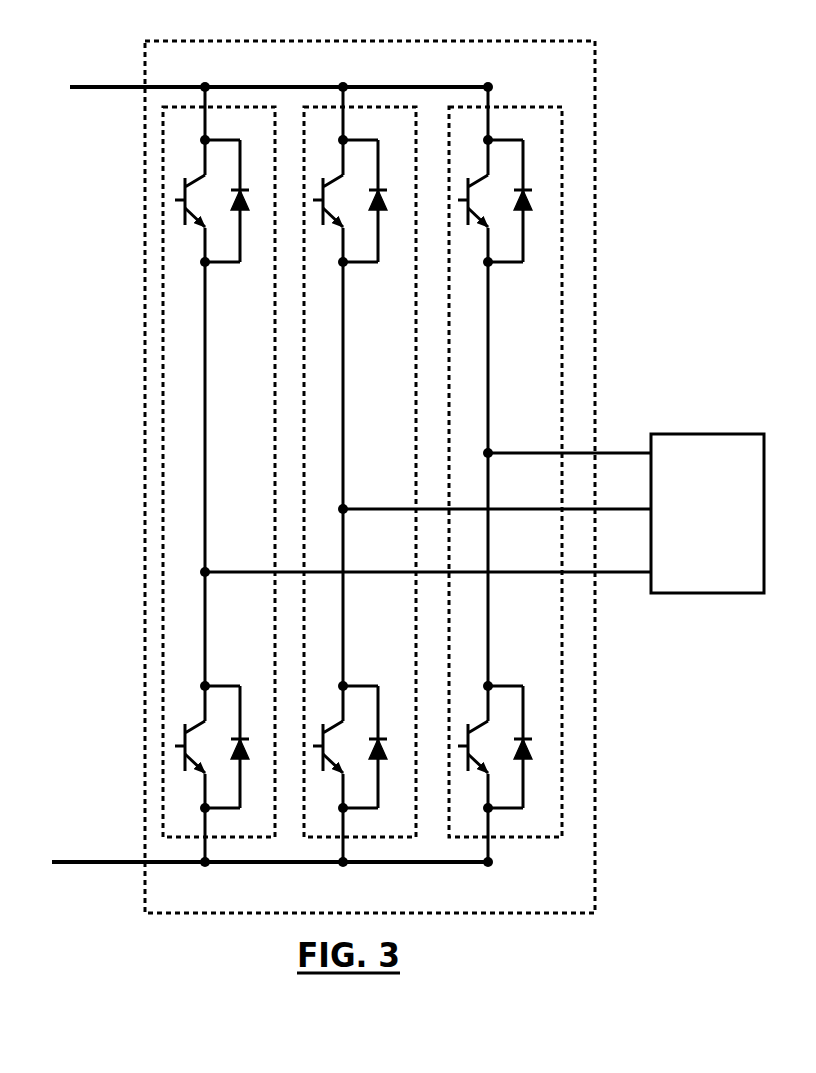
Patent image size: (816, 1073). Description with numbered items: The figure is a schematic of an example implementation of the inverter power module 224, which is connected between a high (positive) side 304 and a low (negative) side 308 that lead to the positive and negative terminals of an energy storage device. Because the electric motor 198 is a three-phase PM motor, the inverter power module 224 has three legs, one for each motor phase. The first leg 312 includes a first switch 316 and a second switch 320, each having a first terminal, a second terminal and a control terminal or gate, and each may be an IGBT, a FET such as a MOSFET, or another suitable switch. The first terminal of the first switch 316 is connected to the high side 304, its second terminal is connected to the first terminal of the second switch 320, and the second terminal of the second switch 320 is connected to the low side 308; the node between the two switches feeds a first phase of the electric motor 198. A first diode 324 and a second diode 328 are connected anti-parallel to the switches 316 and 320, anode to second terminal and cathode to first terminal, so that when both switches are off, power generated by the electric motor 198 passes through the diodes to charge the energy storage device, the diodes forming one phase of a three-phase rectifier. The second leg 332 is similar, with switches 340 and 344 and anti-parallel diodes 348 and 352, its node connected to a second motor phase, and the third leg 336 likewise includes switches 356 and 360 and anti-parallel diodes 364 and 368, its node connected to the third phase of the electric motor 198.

The electric motor 198 is at (707, 593).
The inverter power module 224 is at (597, 60).
The high side 304 is at (97, 87).
The low side 308 is at (97, 862).
The first leg 312 is at (218, 107).
The first switch 316 is at (177, 166).
The second switch 320 is at (180, 711).
The first diode 324 is at (247, 178).
The second diode 328 is at (249, 712).
The second leg 332 is at (358, 107).
The switch 340 is at (327, 166).
The switch 344 is at (328, 712).
The anti-parallel diode 348 is at (390, 178).
The anti-parallel diode 352 is at (390, 720).
The third leg 336 is at (517, 107).
The switch 356 is at (475, 166).
The switch 360 is at (477, 707).
The anti-parallel diode 364 is at (540, 197).
The anti-parallel diode 368 is at (539, 742).